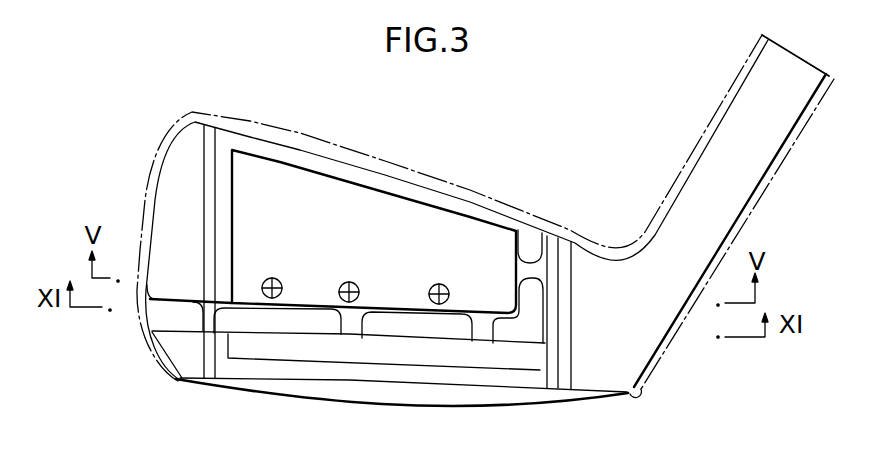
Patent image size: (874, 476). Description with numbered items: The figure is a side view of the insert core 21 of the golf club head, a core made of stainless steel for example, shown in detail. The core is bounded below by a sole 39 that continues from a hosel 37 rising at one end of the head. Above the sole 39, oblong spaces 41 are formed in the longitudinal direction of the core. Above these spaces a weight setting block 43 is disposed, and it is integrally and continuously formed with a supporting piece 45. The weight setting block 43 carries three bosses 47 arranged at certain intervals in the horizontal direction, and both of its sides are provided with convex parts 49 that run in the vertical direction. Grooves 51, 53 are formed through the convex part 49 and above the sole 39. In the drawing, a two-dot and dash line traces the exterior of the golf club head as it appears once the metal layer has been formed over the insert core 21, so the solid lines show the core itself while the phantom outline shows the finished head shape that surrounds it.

The insert core 21 is at (428, 171).
The hosel 37 is at (717, 140).
The sole 39 is at (420, 397).
The oblong spaces 41 is at (364, 338).
The weight setting block 43 is at (302, 180).
The supporting piece 45 is at (358, 314).
The bosses 47 is at (274, 278).
The convex parts 49 is at (213, 124).
The groove 51 is at (224, 172).
The groove 53 is at (367, 375).